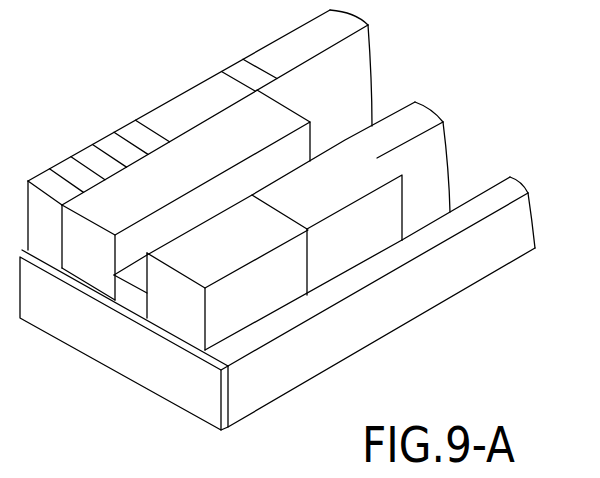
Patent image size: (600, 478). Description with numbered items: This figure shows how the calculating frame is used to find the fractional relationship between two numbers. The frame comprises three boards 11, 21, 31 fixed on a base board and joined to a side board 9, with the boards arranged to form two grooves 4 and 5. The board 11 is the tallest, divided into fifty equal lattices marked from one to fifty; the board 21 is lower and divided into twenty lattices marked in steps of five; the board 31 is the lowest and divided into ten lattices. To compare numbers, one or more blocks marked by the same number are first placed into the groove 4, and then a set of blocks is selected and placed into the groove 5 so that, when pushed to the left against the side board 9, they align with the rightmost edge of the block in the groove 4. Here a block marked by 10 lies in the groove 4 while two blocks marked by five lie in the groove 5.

The side board 9 is at (153, 372).
The board 31 is at (480, 210).
The groove 4 is at (362, 97).
The board 11 is at (268, 50).
The block marked by 10 is at (186, 195).
The groove 5 is at (445, 193).
The board 21 is at (413, 120).